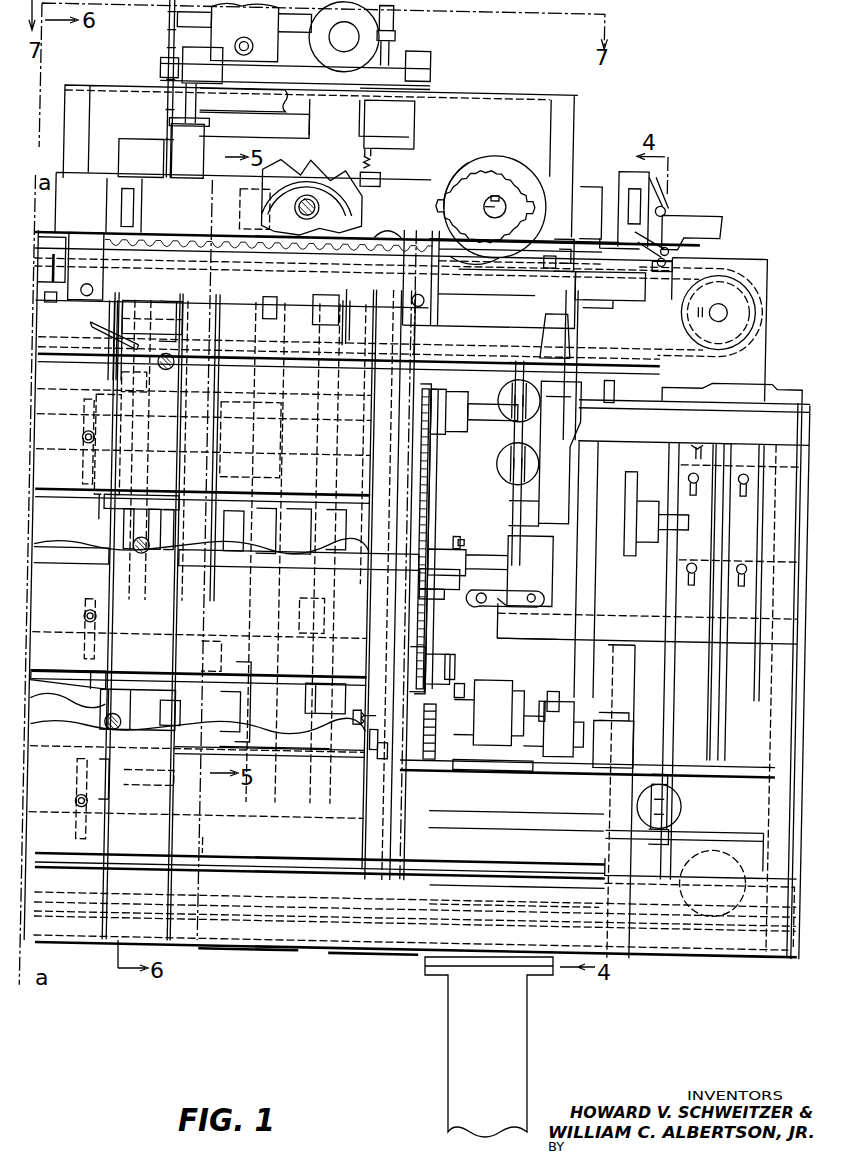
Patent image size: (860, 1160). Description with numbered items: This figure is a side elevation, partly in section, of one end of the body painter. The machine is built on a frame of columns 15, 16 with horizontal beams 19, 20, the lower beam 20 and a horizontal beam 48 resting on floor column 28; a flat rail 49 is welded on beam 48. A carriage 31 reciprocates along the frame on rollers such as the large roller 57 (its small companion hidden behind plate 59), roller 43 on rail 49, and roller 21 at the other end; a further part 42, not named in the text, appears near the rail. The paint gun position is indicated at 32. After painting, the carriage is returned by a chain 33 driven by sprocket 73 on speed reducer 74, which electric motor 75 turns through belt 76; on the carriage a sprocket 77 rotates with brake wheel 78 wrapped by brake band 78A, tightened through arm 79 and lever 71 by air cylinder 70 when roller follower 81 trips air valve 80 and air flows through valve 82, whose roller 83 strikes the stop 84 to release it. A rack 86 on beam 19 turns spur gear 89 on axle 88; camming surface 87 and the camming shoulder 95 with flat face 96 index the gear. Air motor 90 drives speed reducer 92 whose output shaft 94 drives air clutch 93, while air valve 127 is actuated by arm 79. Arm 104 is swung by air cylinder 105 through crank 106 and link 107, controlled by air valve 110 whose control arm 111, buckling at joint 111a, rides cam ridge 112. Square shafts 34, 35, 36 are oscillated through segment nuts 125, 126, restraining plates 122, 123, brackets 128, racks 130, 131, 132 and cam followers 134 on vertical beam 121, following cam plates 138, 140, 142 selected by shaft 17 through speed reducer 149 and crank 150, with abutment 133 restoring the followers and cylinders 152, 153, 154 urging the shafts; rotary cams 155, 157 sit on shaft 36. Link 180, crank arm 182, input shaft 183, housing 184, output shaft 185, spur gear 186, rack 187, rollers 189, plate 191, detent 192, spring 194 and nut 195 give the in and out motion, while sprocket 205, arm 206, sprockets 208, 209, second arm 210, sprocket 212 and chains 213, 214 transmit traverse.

The column 15 is at (372, 513).
The column 16 is at (800, 682).
The round shaft 17 is at (281, 570).
The horizontal beam 19 is at (456, 285).
The lower horizontal beam 20 is at (250, 944).
The roller 21 is at (577, 286).
The floor column 28 is at (528, 1028).
The carriage 31 is at (470, 80).
The paint gun position 32 is at (476, 674).
The chain 33 is at (704, 266).
The square shaft 34 is at (290, 752).
The square shaft 35 is at (490, 424).
The square shaft 36 is at (503, 333).
The plate 42 is at (727, 832).
The large roller 43 is at (674, 886).
The horizontal beam 48 is at (375, 946).
The flat rail 49 is at (440, 898).
The large roller 57 is at (58, 293).
The plate 59 is at (103, 277).
The air cylinder 70 is at (205, 146).
The lever 71 is at (160, 70).
The sprocket 73 is at (758, 302).
The speed reducer 74 is at (770, 271).
The electric motor 75 is at (672, 562).
The belt 76 is at (635, 470).
The sprocket 77 is at (257, 210).
The brake wheel 78 is at (370, 158).
The brake band 78A is at (305, 152).
The arm 79 is at (392, 54).
The air valve 80 is at (218, 48).
The roller follower 81 is at (168, 39).
The valve 82 is at (640, 175).
The roller 83 is at (666, 208).
The fixed cam surface or stop 84 is at (706, 218).
The rack 86 is at (116, 230).
The camming surface 87 is at (388, 233).
The axle 88 is at (500, 195).
The spur gear 89 is at (482, 168).
The air motor 90 is at (343, 36).
The speed reducer 92 is at (277, 50).
The air clutch 93 is at (147, 140).
The output shaft 94 is at (176, 18).
The camming shoulder 95 is at (458, 172).
The flat face 96 is at (460, 260).
The arm 104 is at (326, 300).
The air cylinder 105 is at (276, 300).
The crank 106 is at (314, 686).
The link 107 is at (306, 595).
The air valve 110 is at (628, 213).
The control arm 111 is at (645, 250).
The joint 111a is at (672, 252).
The cam ridge 112 is at (550, 263).
The vertical beam 121 is at (205, 836).
The restraining plate 122 is at (108, 720).
The restraining plate 123 is at (173, 726).
The segment nut 125 is at (120, 378).
The segment nut 126 is at (175, 322).
The air valve 127 is at (430, 52).
The bracket 128 is at (92, 493).
The rack 130 is at (110, 503).
The rack 131 is at (135, 512).
The rack 132 is at (155, 522).
The fixed abutment 133 is at (92, 325).
The cam follower 134 is at (172, 368).
The cam plate 138 is at (50, 706).
The cam plate 140 is at (222, 548).
The cam plate 142 is at (248, 372).
The speed reducer 149 is at (490, 570).
The crank 150 is at (496, 610).
The double acting air cylinder 152 is at (680, 813).
The double acting air cylinder 153 is at (499, 462).
The double acting air cylinder 154 is at (499, 383).
The rotary cam 155 is at (700, 386).
The rotary cam 157 is at (608, 390).
The link 180 is at (560, 690).
The crank arm 182 is at (566, 700).
The input shaft 183 is at (540, 700).
The housing 184 is at (488, 712).
The output shaft 185 is at (455, 771).
The spur gear 186 is at (430, 766).
The rack 187 is at (452, 665).
The rollers 189 is at (440, 655).
The plate 191 is at (430, 604).
The spring loaded detent 192 is at (378, 745).
The spring 194 is at (370, 735).
The nut 195 is at (352, 713).
The sprocket 205 is at (433, 390).
The arm 206 is at (428, 492).
The sprocket 208 is at (416, 590).
The sprocket 209 is at (466, 545).
The second arm 210 is at (462, 589).
The sprocket 212 is at (462, 693).
The chain 213 is at (438, 470).
The chain 214 is at (480, 645).